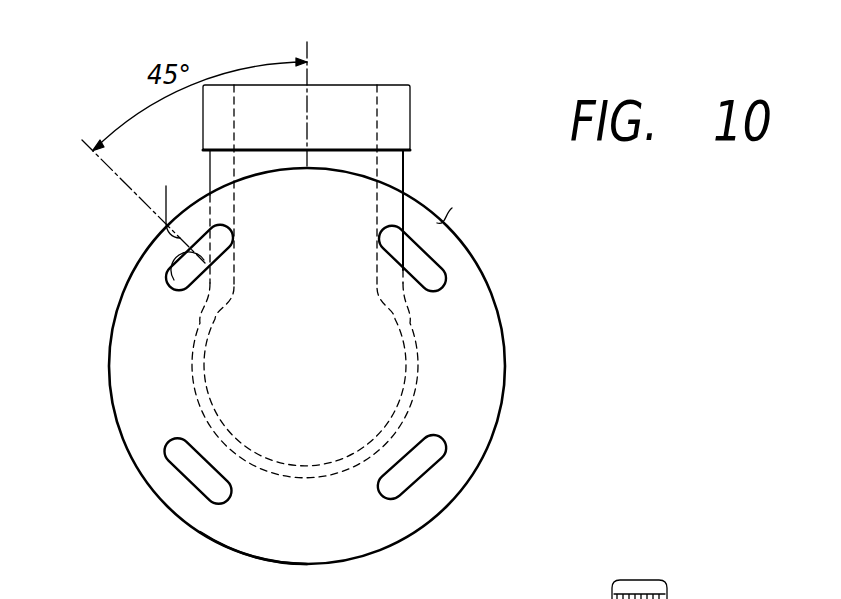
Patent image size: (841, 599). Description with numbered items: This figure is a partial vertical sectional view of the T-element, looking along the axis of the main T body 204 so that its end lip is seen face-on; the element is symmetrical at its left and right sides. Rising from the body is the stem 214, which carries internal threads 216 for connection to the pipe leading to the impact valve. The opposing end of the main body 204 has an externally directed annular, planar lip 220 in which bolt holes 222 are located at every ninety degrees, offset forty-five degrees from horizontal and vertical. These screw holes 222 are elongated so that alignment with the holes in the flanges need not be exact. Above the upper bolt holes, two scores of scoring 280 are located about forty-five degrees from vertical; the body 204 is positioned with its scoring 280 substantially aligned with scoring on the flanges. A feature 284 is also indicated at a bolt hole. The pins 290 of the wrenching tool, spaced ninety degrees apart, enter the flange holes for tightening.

The main T body 204 is at (398, 540).
The stem 214 is at (403, 165).
The internal threads 216 is at (375, 108).
The annular planar lip 220 is at (504, 347).
The bolt holes 222 is at (177, 253).
The scoring 280 is at (314, 198).
The fastener 284 is at (178, 282).
The pins 290 is at (700, 598).